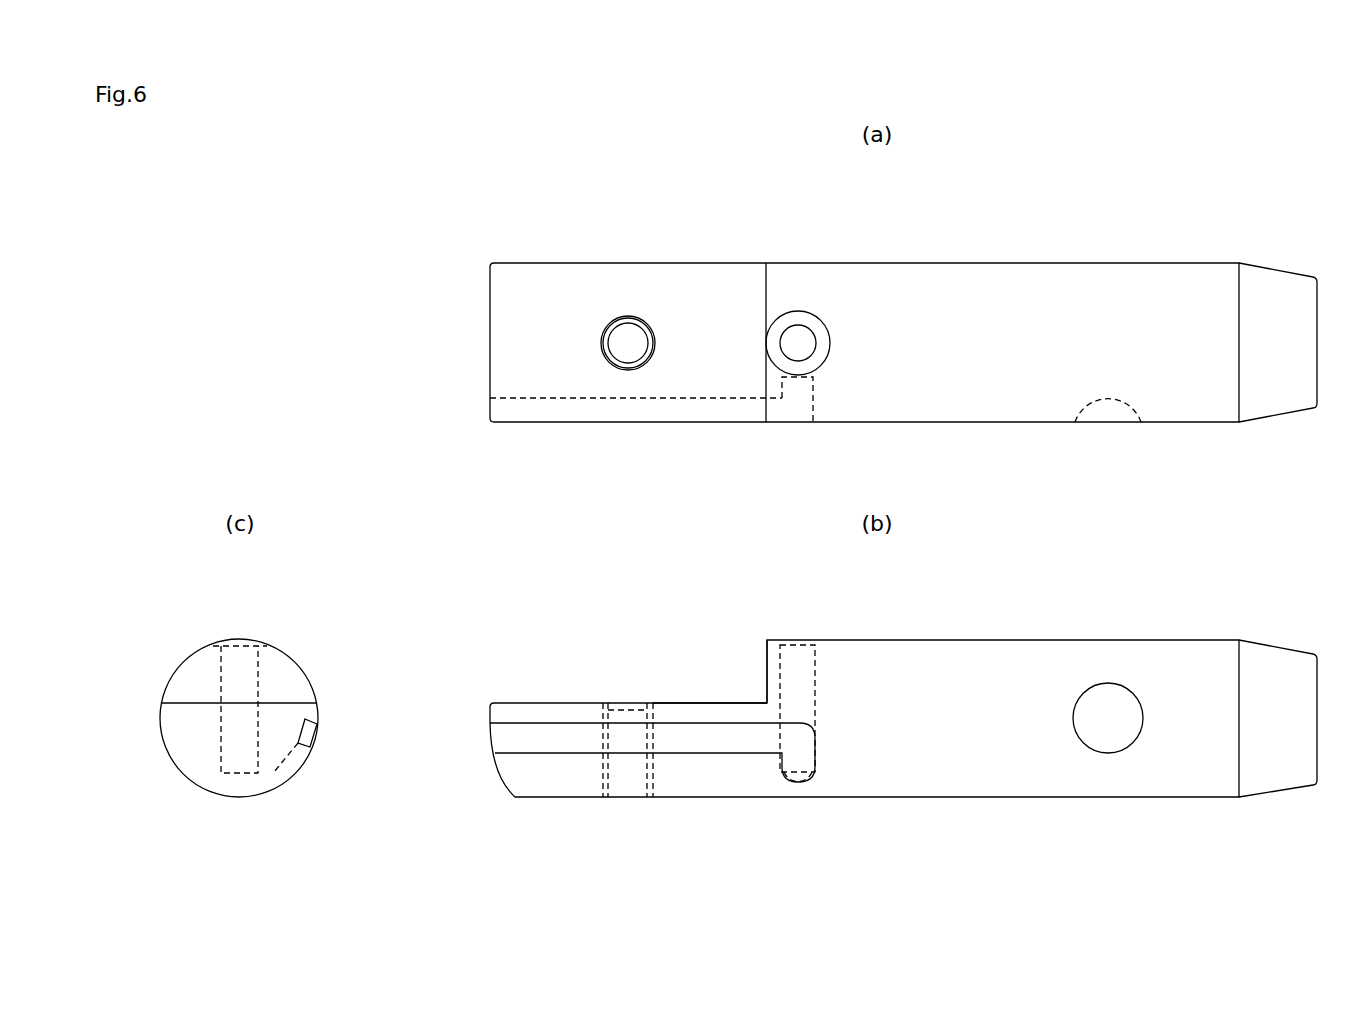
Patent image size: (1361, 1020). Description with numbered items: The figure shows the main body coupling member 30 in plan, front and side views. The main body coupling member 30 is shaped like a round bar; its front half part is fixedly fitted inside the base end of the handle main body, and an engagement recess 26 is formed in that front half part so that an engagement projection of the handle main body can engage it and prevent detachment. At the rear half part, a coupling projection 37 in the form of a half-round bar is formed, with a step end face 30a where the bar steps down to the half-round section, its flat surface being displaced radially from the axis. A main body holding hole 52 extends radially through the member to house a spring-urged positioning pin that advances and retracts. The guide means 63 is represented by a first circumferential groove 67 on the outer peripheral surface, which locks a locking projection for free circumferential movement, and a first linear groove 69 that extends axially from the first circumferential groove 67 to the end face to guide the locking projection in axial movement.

The main body coupling member 30 is at (1107, 253).
The step end face 30a is at (763, 300).
The coupling projection 37 is at (549, 280).
The main body holding hole 52 is at (800, 335).
The guide means 63 is at (750, 415).
The first circumferential groove 67 is at (810, 405).
The first linear groove 69 is at (660, 413).
The engagement recess 26 is at (1123, 405).